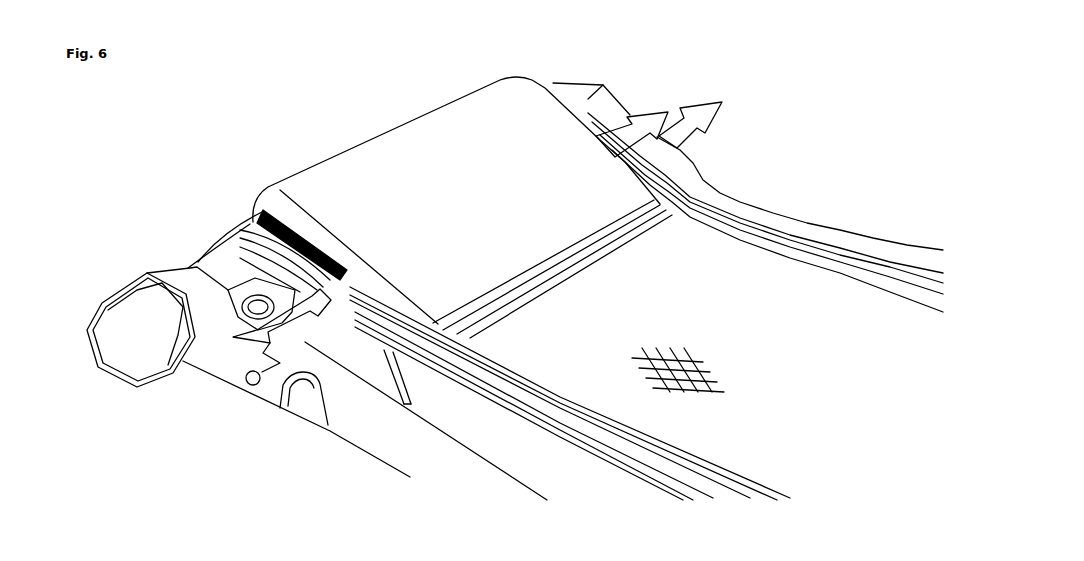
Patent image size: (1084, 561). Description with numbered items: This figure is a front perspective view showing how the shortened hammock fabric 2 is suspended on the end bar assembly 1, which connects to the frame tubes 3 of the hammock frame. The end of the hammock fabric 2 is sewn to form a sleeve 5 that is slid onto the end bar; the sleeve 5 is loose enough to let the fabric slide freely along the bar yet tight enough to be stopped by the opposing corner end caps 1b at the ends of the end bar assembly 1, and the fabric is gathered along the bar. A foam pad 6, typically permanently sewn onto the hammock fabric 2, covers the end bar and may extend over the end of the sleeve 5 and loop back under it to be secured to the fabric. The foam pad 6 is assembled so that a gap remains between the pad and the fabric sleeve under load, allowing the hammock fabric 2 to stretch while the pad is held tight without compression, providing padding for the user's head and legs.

The end bar assembly 1 is at (88, 373).
The corner end cap 1b is at (215, 377).
The hammock fabric 2 is at (437, 373).
The frame tube 3 is at (417, 462).
The sleeve 5 is at (303, 323).
The foam pad 6 is at (420, 230).